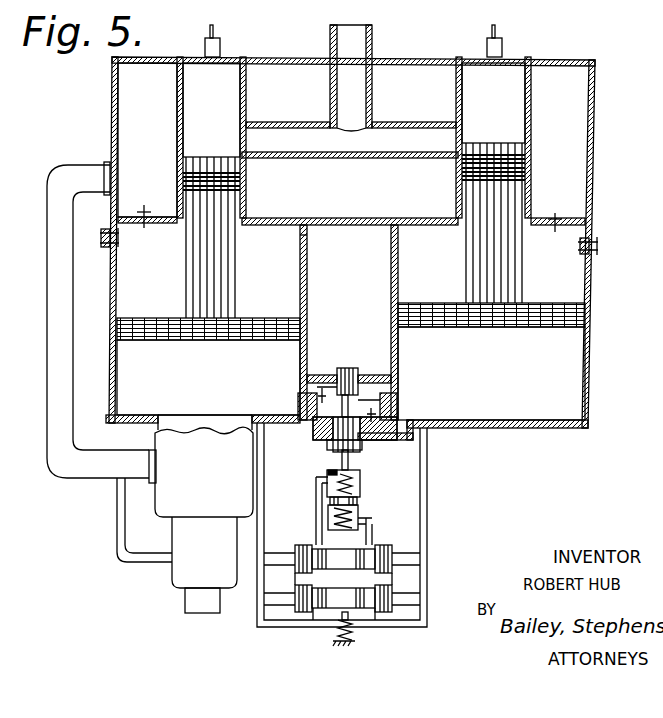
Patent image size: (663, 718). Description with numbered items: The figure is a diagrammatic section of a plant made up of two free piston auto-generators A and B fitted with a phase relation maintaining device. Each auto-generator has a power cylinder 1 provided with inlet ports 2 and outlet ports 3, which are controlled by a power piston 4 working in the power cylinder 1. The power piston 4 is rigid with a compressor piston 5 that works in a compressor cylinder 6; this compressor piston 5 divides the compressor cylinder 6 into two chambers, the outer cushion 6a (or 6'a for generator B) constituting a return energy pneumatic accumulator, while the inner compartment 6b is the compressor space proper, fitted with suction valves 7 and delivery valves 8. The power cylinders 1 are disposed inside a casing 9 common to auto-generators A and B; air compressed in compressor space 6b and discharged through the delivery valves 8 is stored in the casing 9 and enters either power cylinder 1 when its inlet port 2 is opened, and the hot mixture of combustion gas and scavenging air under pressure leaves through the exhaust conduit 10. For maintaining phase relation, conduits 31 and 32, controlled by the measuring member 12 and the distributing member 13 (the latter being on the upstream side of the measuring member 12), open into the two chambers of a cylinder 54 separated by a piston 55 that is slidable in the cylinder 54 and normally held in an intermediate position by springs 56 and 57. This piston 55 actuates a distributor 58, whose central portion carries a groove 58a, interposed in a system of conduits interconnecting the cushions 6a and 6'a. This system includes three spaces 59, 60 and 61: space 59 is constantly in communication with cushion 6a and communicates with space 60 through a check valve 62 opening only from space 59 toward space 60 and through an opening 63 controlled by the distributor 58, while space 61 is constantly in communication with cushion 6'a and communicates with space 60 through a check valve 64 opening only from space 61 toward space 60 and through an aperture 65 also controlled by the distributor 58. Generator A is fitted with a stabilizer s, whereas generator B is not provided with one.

The power cylinder 1 is at (248, 87).
The inlet ports 2 is at (175, 152).
The outlet ports 3 is at (240, 130).
The power piston 4 is at (187, 268).
The compressor piston 5 is at (167, 337).
The compressor cylinder 6 is at (349, 322).
The cushion chamber 6a is at (125, 385).
The cushion chamber 6'a is at (495, 395).
The compressor space 6b is at (283, 247).
The suction valves 7 is at (110, 247).
The delivery valves 8 is at (144, 210).
The casing 9 is at (593, 132).
The exhaust conduit 10 is at (350, 42).
The measuring member 12 is at (367, 555).
The distributing member 13 is at (387, 595).
The conduit 31 is at (316, 490).
The conduit 32 is at (372, 525).
The cylinder 54 is at (360, 478).
The piston 55 is at (357, 498).
The spring 56 is at (328, 472).
The spring 57 is at (328, 520).
The distributor 58 is at (341, 368).
The groove 58a is at (307, 423).
The space 59 is at (313, 387).
The space 60 is at (373, 403).
The space 61 is at (395, 430).
The check valve 62 is at (300, 402).
The opening 63 is at (370, 375).
The check valve 64 is at (393, 410).
The aperture 65 is at (362, 422).
The stabilizer s is at (190, 482).
The auto-generator A is at (231, 38).
The auto-generator B is at (462, 39).